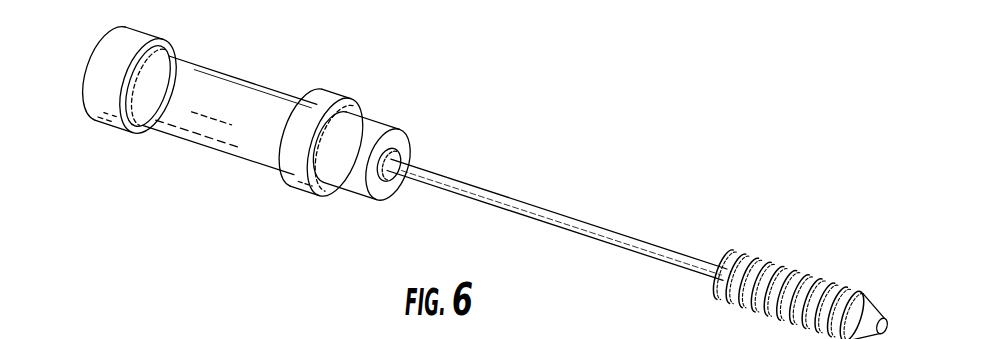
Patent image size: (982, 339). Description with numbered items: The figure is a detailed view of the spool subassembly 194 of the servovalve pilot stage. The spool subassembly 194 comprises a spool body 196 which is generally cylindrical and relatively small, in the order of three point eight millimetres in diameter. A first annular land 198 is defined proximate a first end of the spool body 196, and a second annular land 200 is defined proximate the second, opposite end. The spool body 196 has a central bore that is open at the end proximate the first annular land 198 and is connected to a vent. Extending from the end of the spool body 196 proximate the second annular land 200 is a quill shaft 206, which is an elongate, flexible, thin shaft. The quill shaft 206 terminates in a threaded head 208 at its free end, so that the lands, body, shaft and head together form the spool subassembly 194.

The spool subassembly 194 is at (648, 158).
The spool body 196 is at (213, 137).
The first annular land 198 is at (97, 88).
The second annular land 200 is at (304, 183).
The quill shaft 206 is at (641, 239).
The threaded head 208 is at (803, 288).